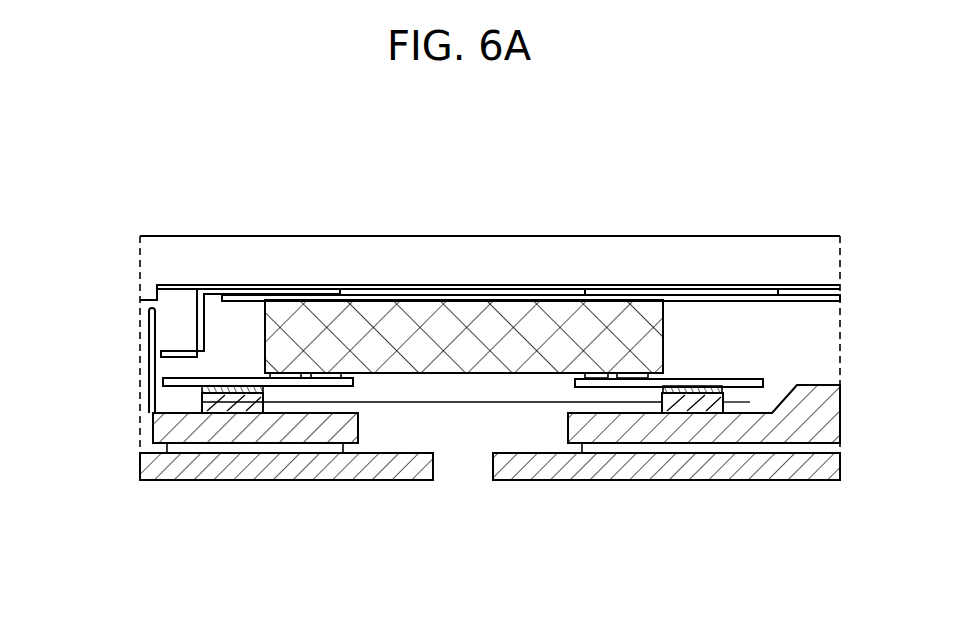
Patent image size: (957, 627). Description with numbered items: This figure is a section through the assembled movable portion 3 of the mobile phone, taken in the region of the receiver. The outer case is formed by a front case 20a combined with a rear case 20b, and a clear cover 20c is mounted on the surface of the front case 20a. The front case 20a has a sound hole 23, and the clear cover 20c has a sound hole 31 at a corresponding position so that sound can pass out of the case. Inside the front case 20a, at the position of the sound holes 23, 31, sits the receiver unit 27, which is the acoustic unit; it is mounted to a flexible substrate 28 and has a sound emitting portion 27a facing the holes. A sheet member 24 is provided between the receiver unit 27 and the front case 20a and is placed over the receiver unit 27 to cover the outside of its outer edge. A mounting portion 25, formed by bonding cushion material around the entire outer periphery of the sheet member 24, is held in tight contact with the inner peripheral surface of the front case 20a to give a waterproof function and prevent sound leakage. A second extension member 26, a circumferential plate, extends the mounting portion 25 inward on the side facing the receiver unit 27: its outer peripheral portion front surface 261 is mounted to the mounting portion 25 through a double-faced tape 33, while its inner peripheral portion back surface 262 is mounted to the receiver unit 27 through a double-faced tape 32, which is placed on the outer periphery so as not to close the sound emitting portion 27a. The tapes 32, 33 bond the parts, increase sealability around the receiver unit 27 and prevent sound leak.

The movable portion 3 is at (204, 234).
The front case 20a is at (153, 432).
The rear case 20b is at (700, 235).
The clear cover 20c is at (697, 473).
The sound hole 23 is at (568, 427).
The sheet member 24 is at (468, 400).
The mounting portion 25 is at (204, 402).
The second extension member 26 is at (193, 378).
The outer peripheral portion front surface 261 is at (228, 392).
The inner peripheral portion back surface 262 is at (313, 372).
The receiver unit 27 is at (525, 327).
The sound emitting portion 27a is at (447, 381).
The flexible substrate 28 is at (566, 292).
The sound hole 31 is at (492, 463).
The double-faced tape 32 is at (298, 371).
The double-faced tape 33 is at (150, 388).